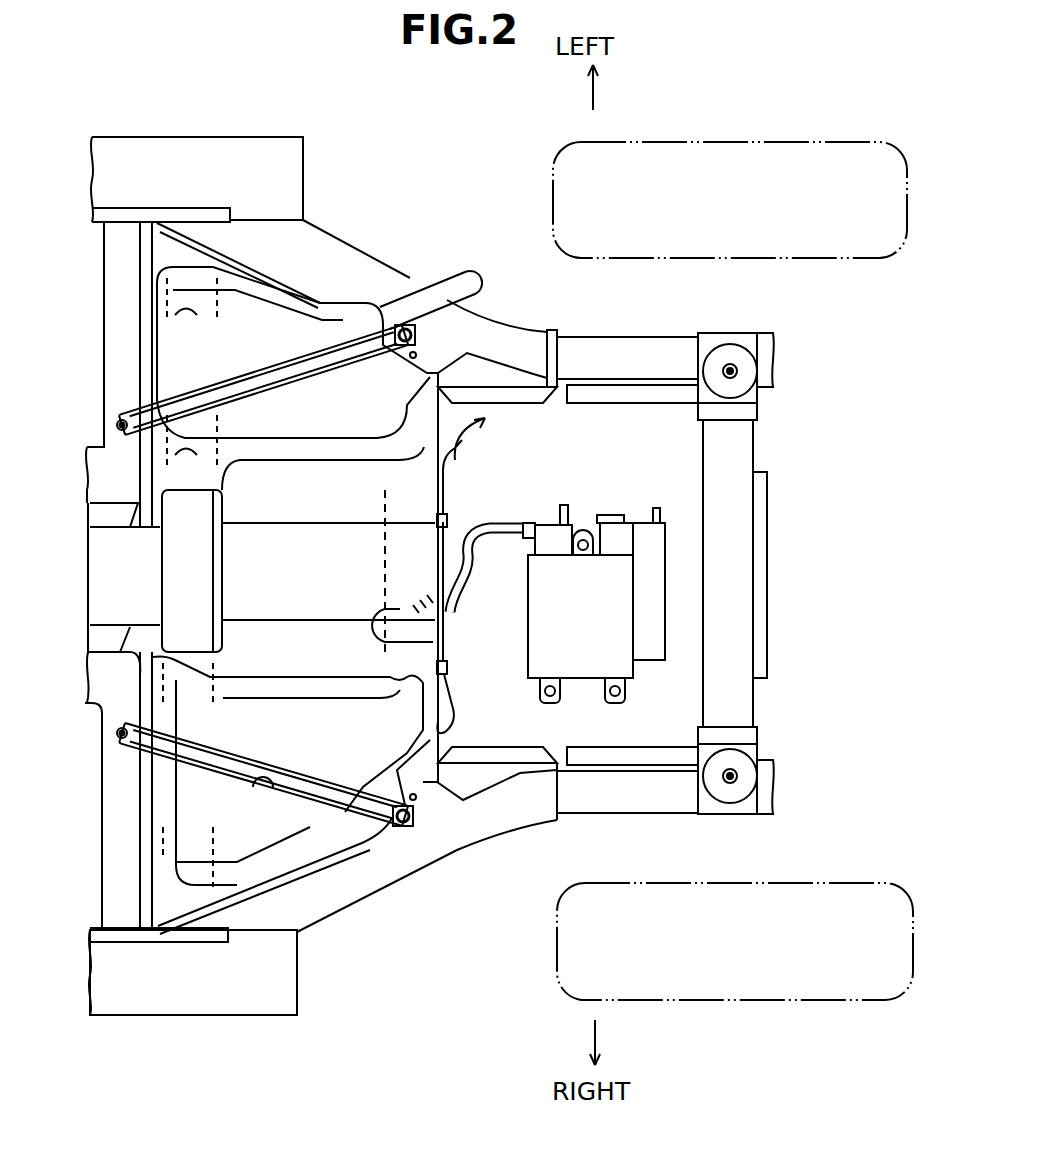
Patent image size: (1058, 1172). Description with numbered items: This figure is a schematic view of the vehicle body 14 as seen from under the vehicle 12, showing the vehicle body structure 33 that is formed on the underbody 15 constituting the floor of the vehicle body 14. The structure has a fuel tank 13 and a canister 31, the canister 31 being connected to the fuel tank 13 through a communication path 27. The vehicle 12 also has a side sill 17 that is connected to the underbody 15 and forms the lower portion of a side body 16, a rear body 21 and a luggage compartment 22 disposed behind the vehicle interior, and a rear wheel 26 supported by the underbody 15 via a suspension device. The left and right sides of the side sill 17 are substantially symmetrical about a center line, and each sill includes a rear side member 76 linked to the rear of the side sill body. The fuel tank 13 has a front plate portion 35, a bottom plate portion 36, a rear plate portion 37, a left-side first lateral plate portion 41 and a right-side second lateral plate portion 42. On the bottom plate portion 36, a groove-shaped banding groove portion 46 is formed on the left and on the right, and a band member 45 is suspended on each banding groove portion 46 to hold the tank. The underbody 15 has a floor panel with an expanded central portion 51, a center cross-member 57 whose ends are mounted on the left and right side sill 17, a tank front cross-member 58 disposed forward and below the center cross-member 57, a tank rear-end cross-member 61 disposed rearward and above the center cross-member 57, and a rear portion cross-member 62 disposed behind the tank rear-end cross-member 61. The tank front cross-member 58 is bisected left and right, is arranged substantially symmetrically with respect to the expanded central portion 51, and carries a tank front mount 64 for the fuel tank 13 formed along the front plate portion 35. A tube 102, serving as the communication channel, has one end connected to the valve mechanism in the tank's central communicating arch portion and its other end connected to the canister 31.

The vehicle 12 is at (133, 90).
The fuel tank 13 is at (255, 137).
The vehicle body 14 is at (294, 125).
The underbody 15 is at (157, 262).
The side body 16 is at (180, 137).
The side sill 17 is at (146, 1017).
The rear body 21 is at (797, 339).
The luggage compartment 22 is at (680, 461).
The rear wheel 26 is at (710, 131).
The communication path 27 is at (433, 561).
The canister 31 is at (603, 491).
The vehicle body structure 33 is at (504, 496).
The front plate portion 35 is at (155, 315).
The bottom plate portion 36 is at (210, 347).
The rear plate portion 37 is at (473, 466).
The first lateral plate portion 41 is at (272, 265).
The second lateral plate portion 42 is at (337, 797).
The band member 45 is at (340, 345).
The banding groove portion 46 is at (175, 395).
The expanded central portion 51 is at (79, 542).
The center cross-member 57 is at (140, 585).
The tank front cross-member 58 is at (104, 278).
The tank rear-end cross-member 61 is at (447, 647).
The rear portion cross-member 62 is at (757, 508).
The tank front mount 64 is at (115, 430).
The rear side member 76 is at (421, 267).
The tube 102 is at (515, 516).